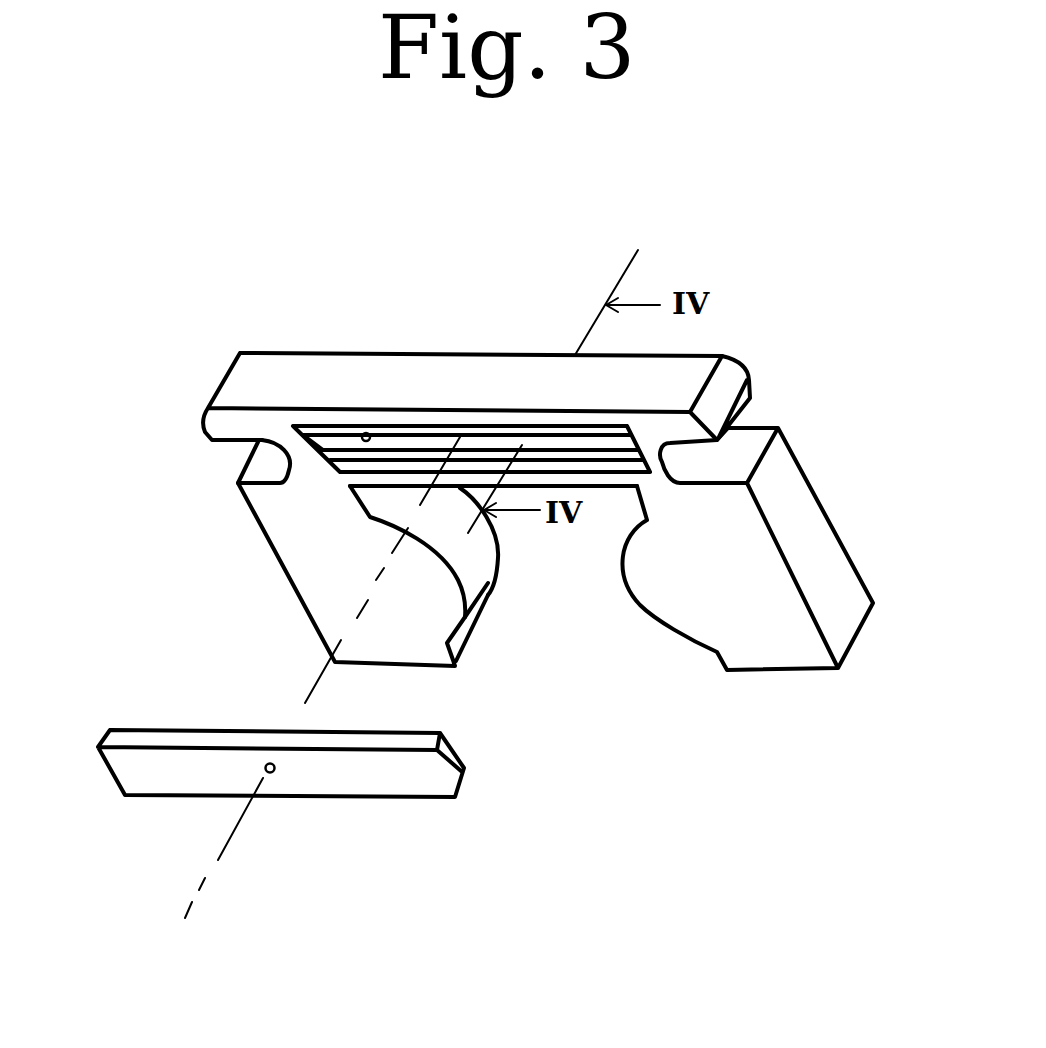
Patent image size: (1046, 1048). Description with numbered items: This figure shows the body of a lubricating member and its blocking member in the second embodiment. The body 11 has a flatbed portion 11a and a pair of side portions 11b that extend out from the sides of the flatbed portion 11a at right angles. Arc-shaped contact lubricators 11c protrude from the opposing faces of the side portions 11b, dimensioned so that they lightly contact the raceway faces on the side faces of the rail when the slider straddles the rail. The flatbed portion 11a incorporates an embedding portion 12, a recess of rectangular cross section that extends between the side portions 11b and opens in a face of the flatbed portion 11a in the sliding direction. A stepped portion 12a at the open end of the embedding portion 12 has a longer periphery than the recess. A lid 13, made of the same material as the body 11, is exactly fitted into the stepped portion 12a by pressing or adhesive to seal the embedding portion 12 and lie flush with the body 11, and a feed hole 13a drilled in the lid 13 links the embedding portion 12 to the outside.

The body 11 is at (243, 320).
The flatbed portion 11a is at (668, 425).
The side portions 11b is at (297, 555).
The contact lubricators 11c is at (633, 587).
The embedding portion 12 is at (373, 433).
The stepped portion 12a is at (325, 428).
The lid 13 is at (114, 719).
The feed hole 13a is at (272, 763).